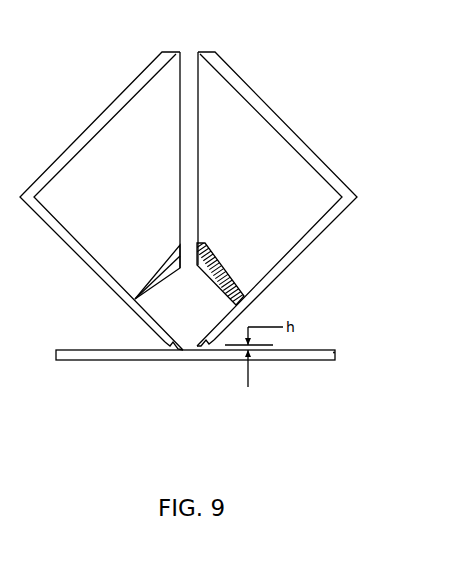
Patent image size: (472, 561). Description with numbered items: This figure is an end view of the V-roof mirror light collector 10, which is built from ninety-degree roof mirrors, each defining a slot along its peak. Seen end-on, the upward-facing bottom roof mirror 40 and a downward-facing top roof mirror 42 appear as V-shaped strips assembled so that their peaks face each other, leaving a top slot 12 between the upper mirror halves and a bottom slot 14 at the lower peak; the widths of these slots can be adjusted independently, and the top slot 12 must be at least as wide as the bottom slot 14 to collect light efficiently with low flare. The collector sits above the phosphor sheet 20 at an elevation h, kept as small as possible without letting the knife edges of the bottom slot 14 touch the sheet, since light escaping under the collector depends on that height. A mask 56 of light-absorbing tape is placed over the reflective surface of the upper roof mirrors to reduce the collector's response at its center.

The V-roof mirror light collector 10 is at (320, 79).
The top slot 12 is at (197, 52).
The bottom slot 14 is at (186, 352).
The phosphor sheet 20 is at (277, 361).
The bottom roof mirror 40 is at (329, 226).
The top roof mirror 42 is at (301, 137).
The mask 56 is at (178, 250).